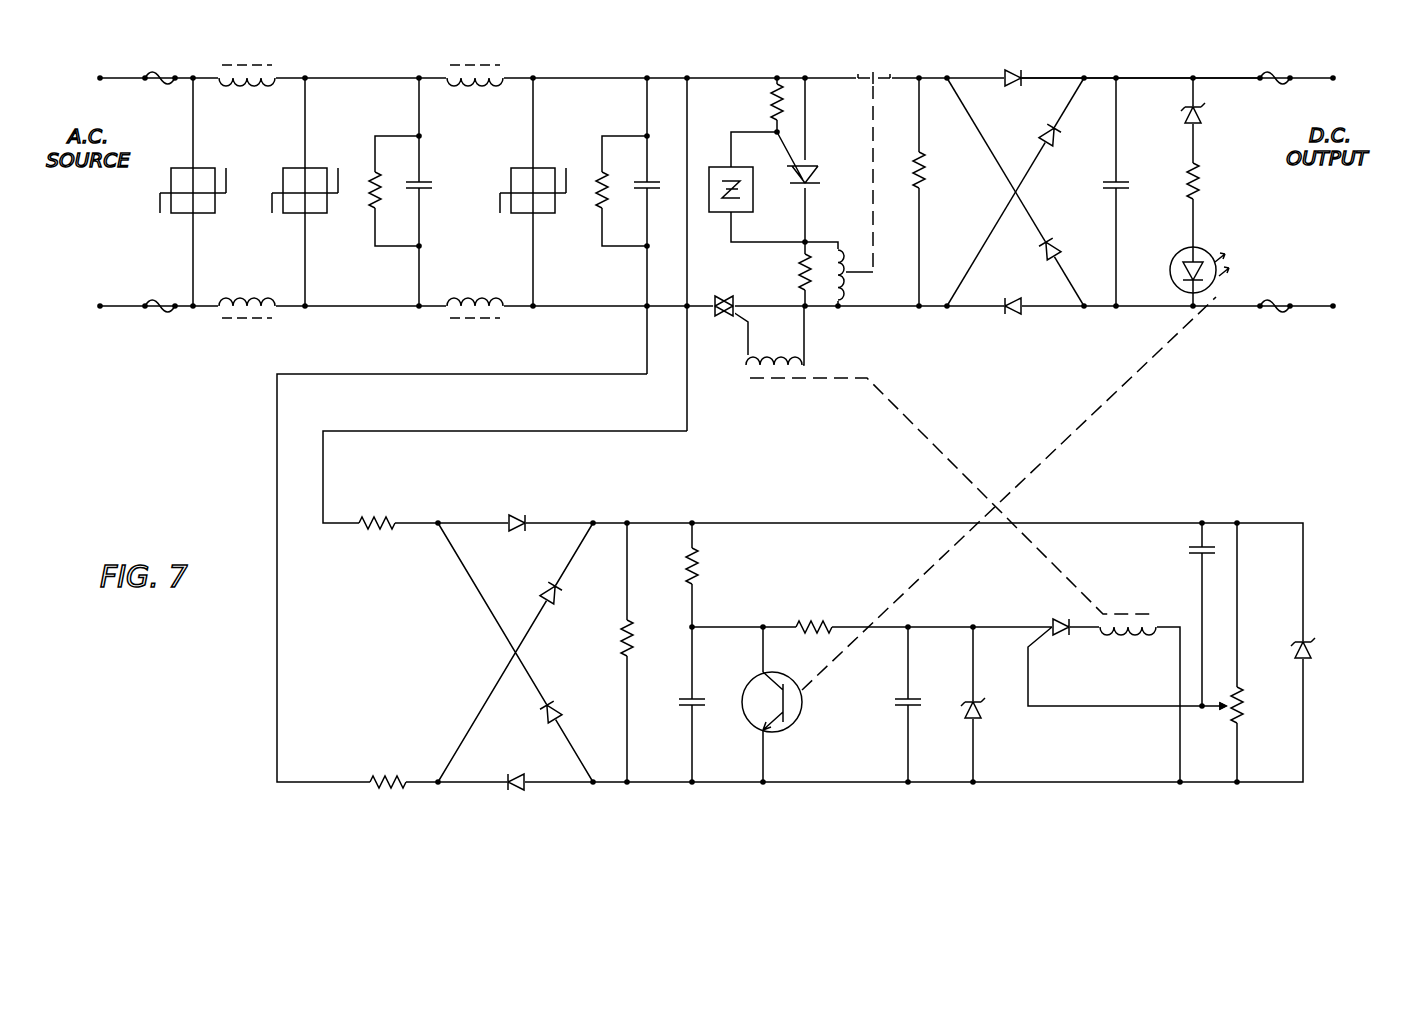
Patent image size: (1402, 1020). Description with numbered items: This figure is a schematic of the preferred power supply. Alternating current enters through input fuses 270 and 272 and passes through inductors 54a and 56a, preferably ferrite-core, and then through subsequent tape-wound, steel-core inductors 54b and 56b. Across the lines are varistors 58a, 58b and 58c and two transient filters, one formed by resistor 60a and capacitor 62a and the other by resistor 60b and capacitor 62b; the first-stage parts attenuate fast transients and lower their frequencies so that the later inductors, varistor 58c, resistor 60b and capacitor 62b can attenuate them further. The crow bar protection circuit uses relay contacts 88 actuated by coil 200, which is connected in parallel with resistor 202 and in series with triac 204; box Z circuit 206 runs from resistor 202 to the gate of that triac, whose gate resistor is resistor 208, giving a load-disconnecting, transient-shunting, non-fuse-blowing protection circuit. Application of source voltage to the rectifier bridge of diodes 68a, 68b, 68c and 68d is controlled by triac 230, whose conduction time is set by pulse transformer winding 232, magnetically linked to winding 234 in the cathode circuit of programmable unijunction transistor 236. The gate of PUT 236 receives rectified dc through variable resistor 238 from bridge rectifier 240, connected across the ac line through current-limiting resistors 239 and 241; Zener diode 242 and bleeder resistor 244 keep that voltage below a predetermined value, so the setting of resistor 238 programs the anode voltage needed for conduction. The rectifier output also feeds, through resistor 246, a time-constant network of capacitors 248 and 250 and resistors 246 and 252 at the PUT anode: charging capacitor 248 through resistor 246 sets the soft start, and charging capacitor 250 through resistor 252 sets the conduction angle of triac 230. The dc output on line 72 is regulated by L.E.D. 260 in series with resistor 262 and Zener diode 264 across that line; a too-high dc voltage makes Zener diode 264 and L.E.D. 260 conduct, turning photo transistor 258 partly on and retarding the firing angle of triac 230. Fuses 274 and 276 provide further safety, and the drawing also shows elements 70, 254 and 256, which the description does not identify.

The fuse 270 is at (160, 66).
The fuse 272 is at (160, 324).
The fuse 274 is at (1275, 62).
The fuse 276 is at (1276, 312).
The inductor 54a is at (276, 70).
The inductor 54b is at (509, 70).
The inductor 56a is at (277, 308).
The inductor 56b is at (505, 308).
The varistor 58a is at (213, 215).
The varistor 58b is at (325, 215).
The varistor 58c is at (512, 213).
The resistor 60a is at (378, 205).
The resistor 60b is at (605, 205).
The capacitor 62a is at (431, 180).
The capacitor 62b is at (654, 180).
The relay contacts 88 is at (873, 71).
The diode 68a is at (1008, 68).
The diode 68b is at (1060, 136).
The diode 68c is at (1058, 246).
The diode 68d is at (1010, 316).
The filter capacitor 70 is at (1120, 180).
The dc line 72 is at (1146, 72).
The coil 200 is at (845, 288).
The resistor 202 is at (798, 274).
The triac 204 is at (814, 164).
The box Z circuit 206 is at (753, 200).
The gate resistor 208 is at (768, 100).
The triac 230 is at (723, 295).
The pulse transformer winding 232 is at (748, 378).
The winding 234 is at (1153, 623).
The programmable unijunction transistor 236 is at (1062, 636).
The variable resistor 238 is at (1245, 708).
The current limiting resistor 239 is at (378, 530).
The bridge rectifier 240 is at (489, 812).
The current limiting resistor 241 is at (388, 772).
The Zener diode 242 is at (1298, 640).
The bleeder resistor 244 is at (618, 640).
The resistor 246 is at (704, 565).
The capacitor 248 is at (680, 708).
The capacitor 250 is at (894, 710).
The resistor 252 is at (814, 618).
The zener diode 254 is at (982, 714).
The capacitor 256 is at (1189, 554).
The photo transistor 258 is at (748, 688).
The L.E.D. 260 is at (1210, 252).
The resistor 262 is at (1205, 173).
The Zener diode 264 is at (1205, 115).